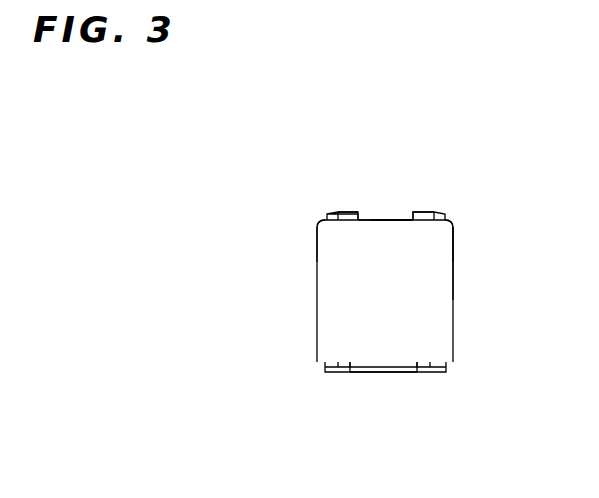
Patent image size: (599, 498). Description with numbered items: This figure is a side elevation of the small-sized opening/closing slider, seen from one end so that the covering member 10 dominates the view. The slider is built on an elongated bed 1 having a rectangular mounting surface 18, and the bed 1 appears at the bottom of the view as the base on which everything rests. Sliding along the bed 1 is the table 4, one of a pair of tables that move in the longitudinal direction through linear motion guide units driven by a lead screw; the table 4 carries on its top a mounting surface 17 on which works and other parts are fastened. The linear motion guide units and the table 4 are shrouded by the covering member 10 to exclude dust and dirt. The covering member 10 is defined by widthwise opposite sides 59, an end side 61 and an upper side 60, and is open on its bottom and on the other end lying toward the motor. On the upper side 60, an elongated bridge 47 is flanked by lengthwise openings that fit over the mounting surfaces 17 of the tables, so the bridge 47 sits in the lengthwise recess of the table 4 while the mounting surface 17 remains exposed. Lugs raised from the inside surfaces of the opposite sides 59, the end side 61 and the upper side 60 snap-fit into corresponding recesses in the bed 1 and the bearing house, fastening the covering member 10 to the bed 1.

The bed 1 is at (345, 370).
The table 4 is at (335, 214).
The covering member 10 is at (336, 298).
The mounting surface 17 is at (347, 212).
The mounting surface 18 is at (400, 372).
The elongated bridge 47 is at (394, 219).
The widthwise opposite sides 59 is at (317, 262).
The upper side 60 is at (376, 219).
The end side 61 is at (423, 296).